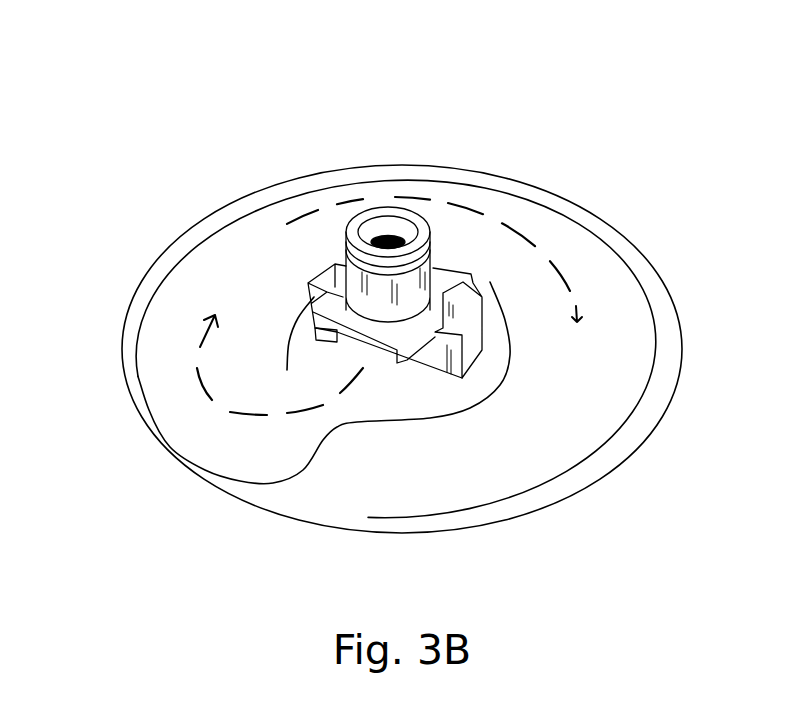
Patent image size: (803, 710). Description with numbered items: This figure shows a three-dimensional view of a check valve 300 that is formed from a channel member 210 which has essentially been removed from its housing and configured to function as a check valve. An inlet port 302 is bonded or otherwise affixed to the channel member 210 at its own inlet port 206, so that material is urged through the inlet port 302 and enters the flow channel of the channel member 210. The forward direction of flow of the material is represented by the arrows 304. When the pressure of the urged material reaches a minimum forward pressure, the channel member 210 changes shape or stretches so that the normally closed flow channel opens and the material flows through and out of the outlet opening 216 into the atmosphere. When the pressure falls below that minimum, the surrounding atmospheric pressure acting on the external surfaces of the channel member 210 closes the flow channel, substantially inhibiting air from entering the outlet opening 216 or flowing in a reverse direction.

The check valve 300 is at (179, 68).
The channel member 210 is at (153, 265).
The outlet opening 216 is at (323, 512).
The arrows 304 is at (478, 208).
The inlet port 302 is at (325, 286).
The inlet port 206 is at (387, 236).